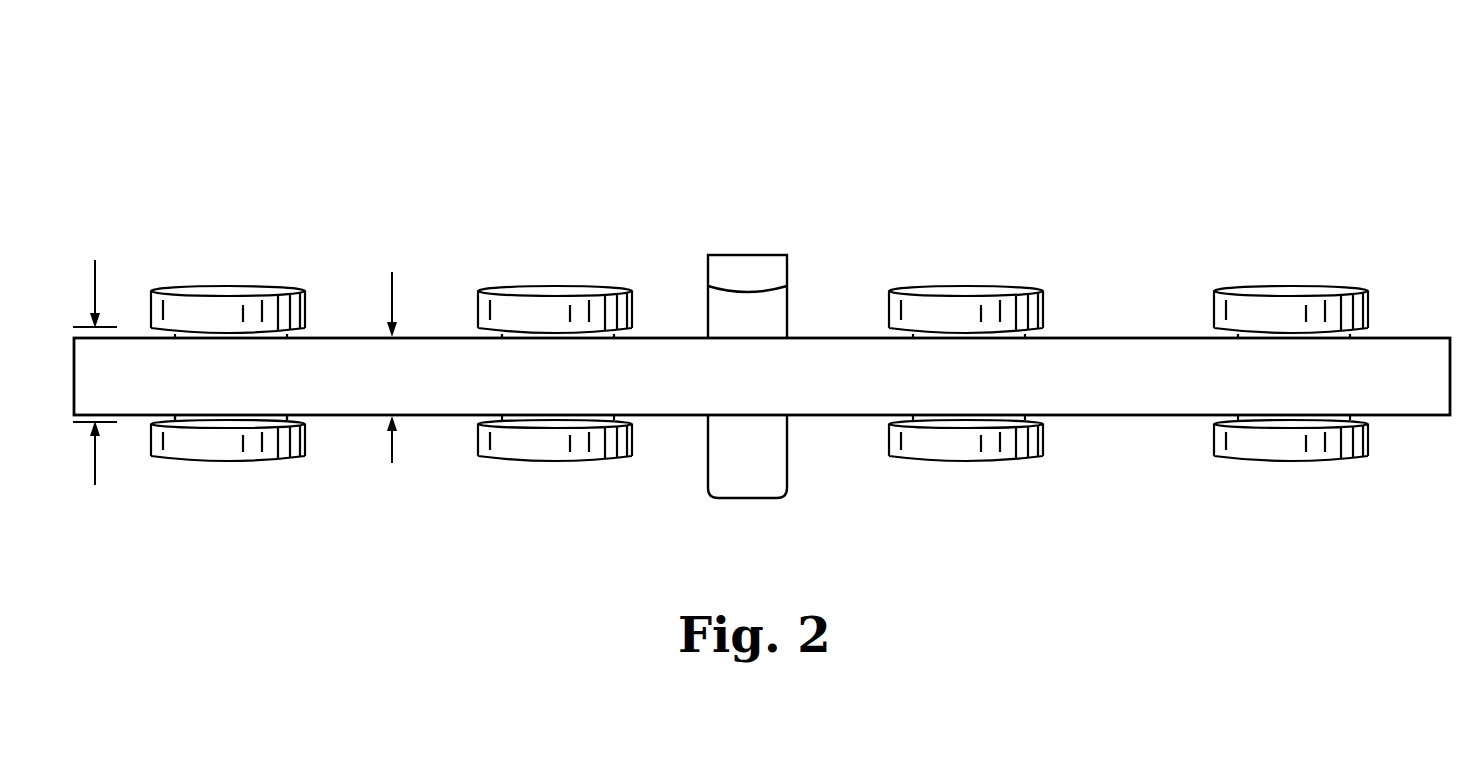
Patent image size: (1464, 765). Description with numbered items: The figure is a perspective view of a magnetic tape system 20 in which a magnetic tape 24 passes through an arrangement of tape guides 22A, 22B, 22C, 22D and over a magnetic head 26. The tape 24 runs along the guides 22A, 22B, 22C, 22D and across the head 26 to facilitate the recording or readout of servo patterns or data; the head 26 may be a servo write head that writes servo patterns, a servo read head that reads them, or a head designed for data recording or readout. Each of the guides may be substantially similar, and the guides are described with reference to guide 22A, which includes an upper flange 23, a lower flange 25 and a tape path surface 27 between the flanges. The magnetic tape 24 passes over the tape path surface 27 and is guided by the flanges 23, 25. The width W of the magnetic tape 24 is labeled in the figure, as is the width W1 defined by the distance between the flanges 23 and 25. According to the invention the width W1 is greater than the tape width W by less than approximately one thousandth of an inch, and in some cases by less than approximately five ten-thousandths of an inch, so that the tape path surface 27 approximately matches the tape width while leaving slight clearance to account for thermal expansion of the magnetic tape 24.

The magnetic tape system 20 is at (910, 100).
The tape guide 22A is at (282, 286).
The tape guide 22B is at (597, 285).
The tape guide 22C is at (990, 287).
The tape guide 22D is at (1322, 287).
The upper flange 23 is at (200, 295).
The magnetic tape 24 is at (450, 388).
The lower flange 25 is at (220, 437).
The magnetic head 26 is at (747, 255).
The tape path surface 27 is at (300, 417).
The width of magnetic tape W is at (398, 285).
The width of tape path surface W1 is at (97, 270).